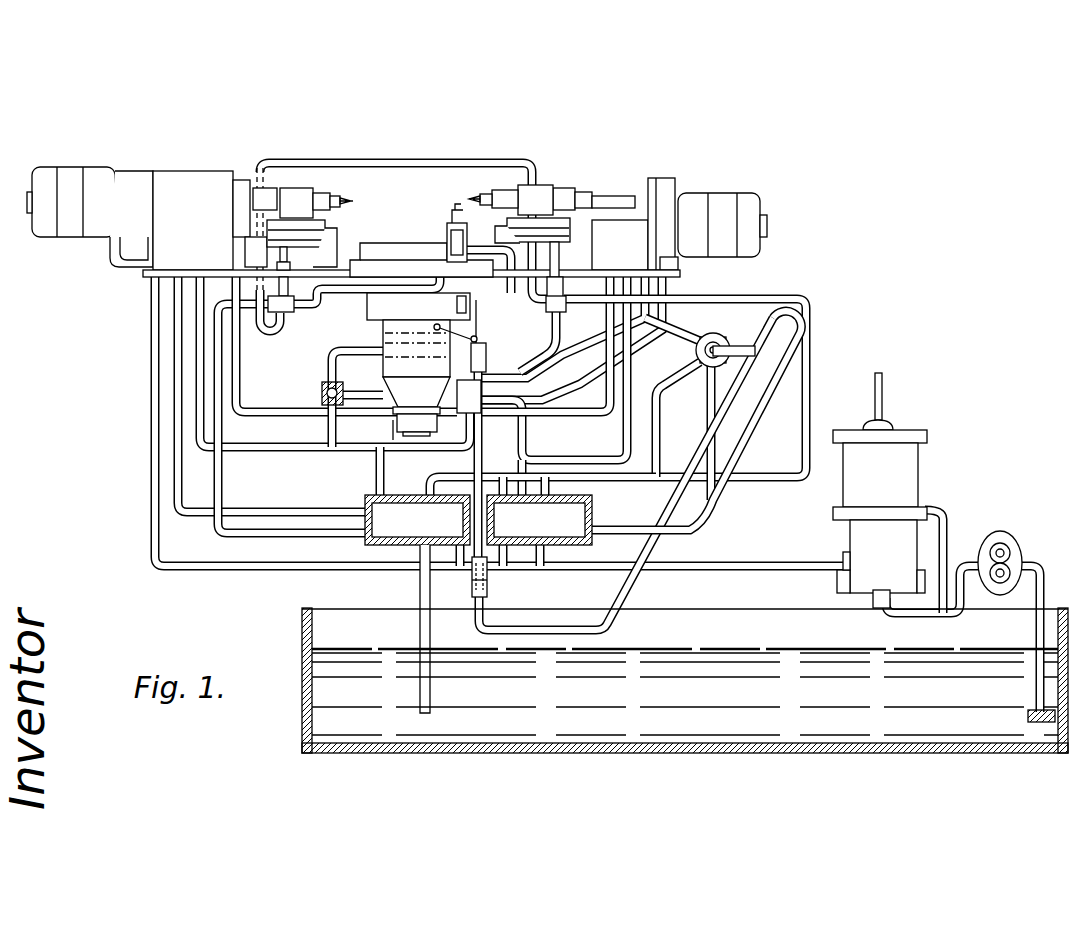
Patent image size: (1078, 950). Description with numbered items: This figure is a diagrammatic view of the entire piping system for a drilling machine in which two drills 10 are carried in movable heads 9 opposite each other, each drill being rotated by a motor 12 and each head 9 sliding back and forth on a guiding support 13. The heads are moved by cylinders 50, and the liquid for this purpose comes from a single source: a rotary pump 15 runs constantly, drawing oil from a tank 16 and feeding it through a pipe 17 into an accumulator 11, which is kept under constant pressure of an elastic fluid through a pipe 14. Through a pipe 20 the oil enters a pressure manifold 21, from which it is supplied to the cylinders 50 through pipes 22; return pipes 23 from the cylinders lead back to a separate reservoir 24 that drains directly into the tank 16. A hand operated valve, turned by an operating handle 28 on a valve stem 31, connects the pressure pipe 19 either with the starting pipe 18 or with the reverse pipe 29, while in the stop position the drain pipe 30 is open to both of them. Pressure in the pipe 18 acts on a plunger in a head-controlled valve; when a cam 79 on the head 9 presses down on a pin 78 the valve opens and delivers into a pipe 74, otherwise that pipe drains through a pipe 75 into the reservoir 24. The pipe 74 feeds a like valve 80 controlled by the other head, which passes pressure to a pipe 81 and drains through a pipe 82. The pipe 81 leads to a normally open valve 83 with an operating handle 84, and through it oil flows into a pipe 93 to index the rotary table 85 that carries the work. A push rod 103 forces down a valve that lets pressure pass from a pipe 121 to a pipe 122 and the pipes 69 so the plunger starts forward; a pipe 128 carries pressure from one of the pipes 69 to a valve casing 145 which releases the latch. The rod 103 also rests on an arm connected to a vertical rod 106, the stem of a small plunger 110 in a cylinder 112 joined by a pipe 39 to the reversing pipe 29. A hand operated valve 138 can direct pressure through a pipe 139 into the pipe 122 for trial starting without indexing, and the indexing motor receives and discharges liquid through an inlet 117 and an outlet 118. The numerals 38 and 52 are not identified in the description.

The movable head 9 is at (299, 188).
The drill 10 is at (346, 201).
The accumulator 11 is at (905, 465).
The motor 12 is at (70, 176).
The guiding support 13 is at (331, 229).
The pipe 14 is at (883, 382).
The rotary pump 15 is at (1005, 545).
The tank 16 is at (816, 722).
The pipe 17 is at (932, 618).
The starting pipe 18 is at (673, 331).
The pressure pipe 19 is at (747, 425).
The pipe 20 is at (733, 561).
The pressure manifold 21 is at (539, 520).
The pipe 22 is at (150, 465).
The return pipe 23 is at (174, 383).
The reservoir 24 is at (417, 604).
The operating handle 28 is at (757, 348).
The reverse pipe 29 is at (716, 395).
The drain pipe 30 is at (661, 395).
The valve stem 31 is at (714, 345).
The pipe 38 is at (232, 288).
The pipe 39 is at (704, 458).
The cylinder 50 is at (193, 180).
The bracket 52 is at (270, 188).
The pipe 69 is at (196, 322).
The pipe 74 is at (386, 160).
The pipe 75 is at (757, 300).
The pin 78 is at (280, 246).
The cam 79 is at (299, 249).
The valve 80 is at (294, 309).
The pipe 81 is at (343, 287).
The pipe 82 is at (223, 368).
The normally open valve 83 is at (447, 231).
The operating handle 84 is at (454, 212).
The rotary table 85 is at (388, 245).
The pipe 93 is at (507, 285).
The push rod 103 is at (466, 319).
The vertical rod 106 is at (473, 553).
The plunger 110 is at (488, 585).
The cylinder 112 is at (470, 585).
The inlet 117 is at (527, 462).
The outlet 118 is at (376, 463).
The pipe 121 is at (610, 464).
The pipe 122 is at (328, 434).
The pipe 128 is at (536, 372).
The hand operated valve 138 is at (320, 393).
The pipe 139 is at (330, 360).
The valve casing 145 is at (488, 357).